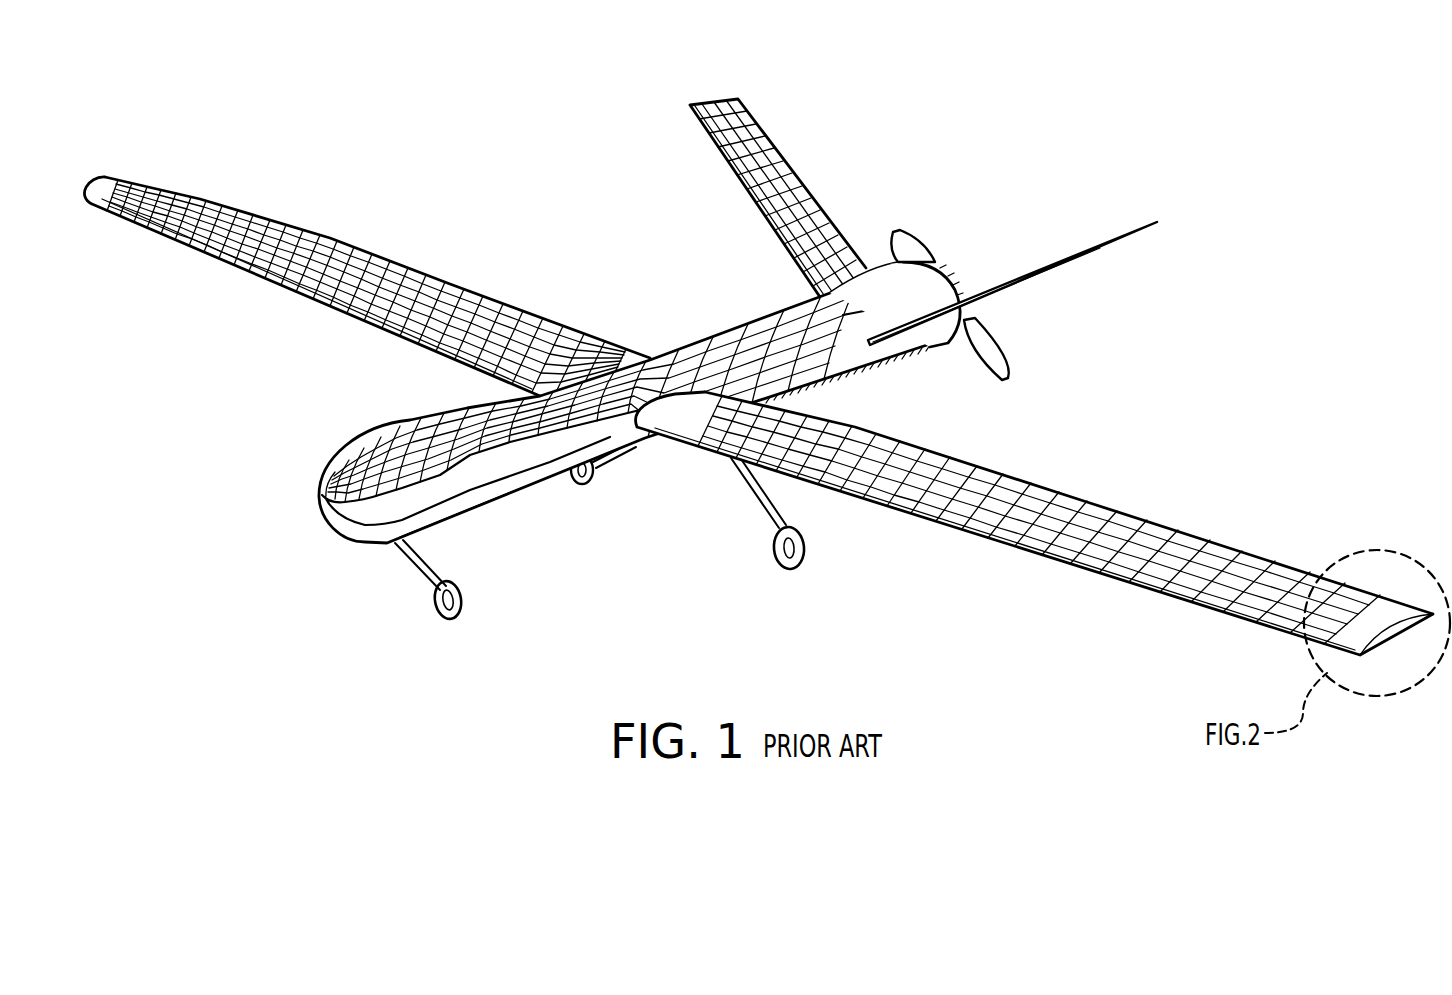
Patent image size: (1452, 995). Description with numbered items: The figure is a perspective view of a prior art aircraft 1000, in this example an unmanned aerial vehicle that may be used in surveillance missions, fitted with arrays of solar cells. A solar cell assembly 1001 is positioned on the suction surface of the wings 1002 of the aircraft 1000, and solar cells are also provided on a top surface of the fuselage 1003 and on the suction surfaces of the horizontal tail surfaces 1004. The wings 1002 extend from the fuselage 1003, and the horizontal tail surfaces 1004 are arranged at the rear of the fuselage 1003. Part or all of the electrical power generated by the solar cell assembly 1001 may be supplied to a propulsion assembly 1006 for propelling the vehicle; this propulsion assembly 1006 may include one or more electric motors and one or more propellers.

The aircraft 1000 is at (758, 359).
The solar cell assembly 1001 is at (1117, 530).
The wings 1002 is at (260, 313).
The fuselage 1003 is at (477, 472).
The horizontal tail surfaces 1004 is at (765, 150).
The propulsion assembly 1006 is at (947, 232).